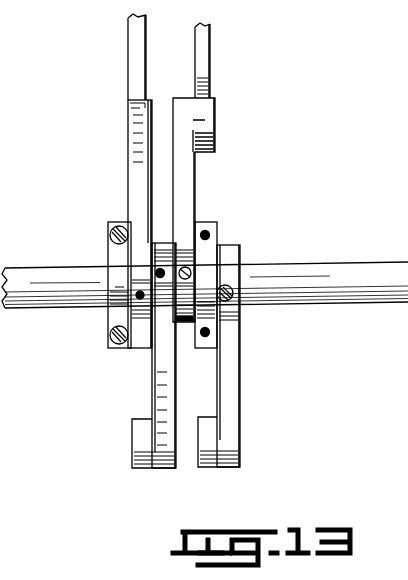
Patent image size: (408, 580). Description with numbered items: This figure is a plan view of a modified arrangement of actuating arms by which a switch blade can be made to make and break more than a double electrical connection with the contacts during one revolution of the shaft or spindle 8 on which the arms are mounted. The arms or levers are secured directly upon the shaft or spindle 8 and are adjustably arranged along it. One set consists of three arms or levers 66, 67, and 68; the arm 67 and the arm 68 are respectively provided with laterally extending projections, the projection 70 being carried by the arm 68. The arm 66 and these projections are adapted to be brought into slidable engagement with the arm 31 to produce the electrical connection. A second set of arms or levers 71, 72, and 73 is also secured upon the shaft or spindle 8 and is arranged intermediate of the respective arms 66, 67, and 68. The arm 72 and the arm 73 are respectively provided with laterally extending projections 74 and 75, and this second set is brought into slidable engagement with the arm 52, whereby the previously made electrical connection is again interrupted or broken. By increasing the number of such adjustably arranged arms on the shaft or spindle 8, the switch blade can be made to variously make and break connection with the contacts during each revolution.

The shaft or spindle 8 is at (362, 268).
The arm 31 is at (130, 62).
The arm 52 is at (203, 75).
The arm or lever 66 is at (136, 163).
The arm or lever 67 is at (118, 295).
The arm or lever 68 is at (156, 382).
The laterally-extending projection 70 is at (137, 440).
The arm or lever 71 is at (207, 265).
The arm or lever 72 is at (233, 375).
The arm or lever 73 is at (183, 188).
The laterally-extending projection 74 is at (212, 453).
The laterally-extending projection 75 is at (215, 139).